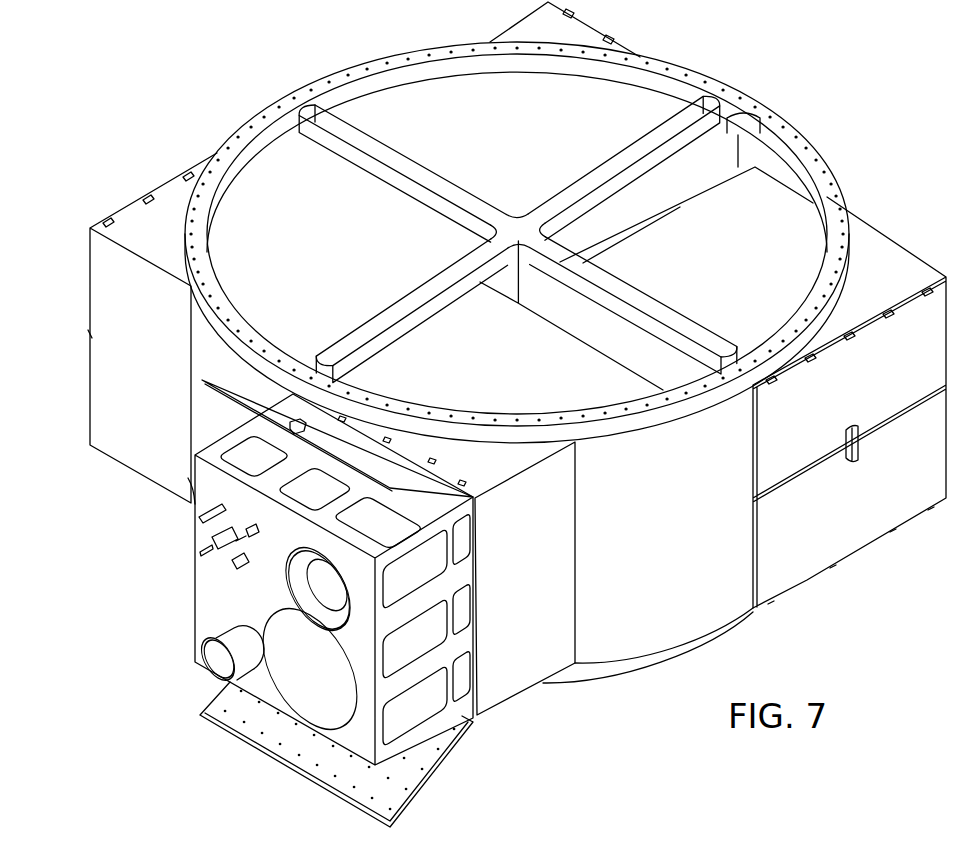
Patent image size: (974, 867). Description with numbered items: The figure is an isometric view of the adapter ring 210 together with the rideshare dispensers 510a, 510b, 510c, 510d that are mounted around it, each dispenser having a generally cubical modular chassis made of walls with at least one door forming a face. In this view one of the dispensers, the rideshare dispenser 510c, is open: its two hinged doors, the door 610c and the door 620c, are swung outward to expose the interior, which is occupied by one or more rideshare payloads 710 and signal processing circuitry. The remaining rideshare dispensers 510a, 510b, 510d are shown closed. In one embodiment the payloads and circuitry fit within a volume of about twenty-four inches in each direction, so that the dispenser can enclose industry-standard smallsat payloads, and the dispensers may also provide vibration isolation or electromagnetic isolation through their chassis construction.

The adapter ring 210 is at (834, 74).
The rideshare dispenser 510a is at (142, 478).
The rideshare dispenser 510b is at (548, 2).
The rideshare dispenser 510c is at (510, 700).
The rideshare dispenser 510d is at (913, 228).
The door 610c is at (212, 392).
The door 620c is at (433, 773).
The rideshare payloads 710 is at (193, 608).